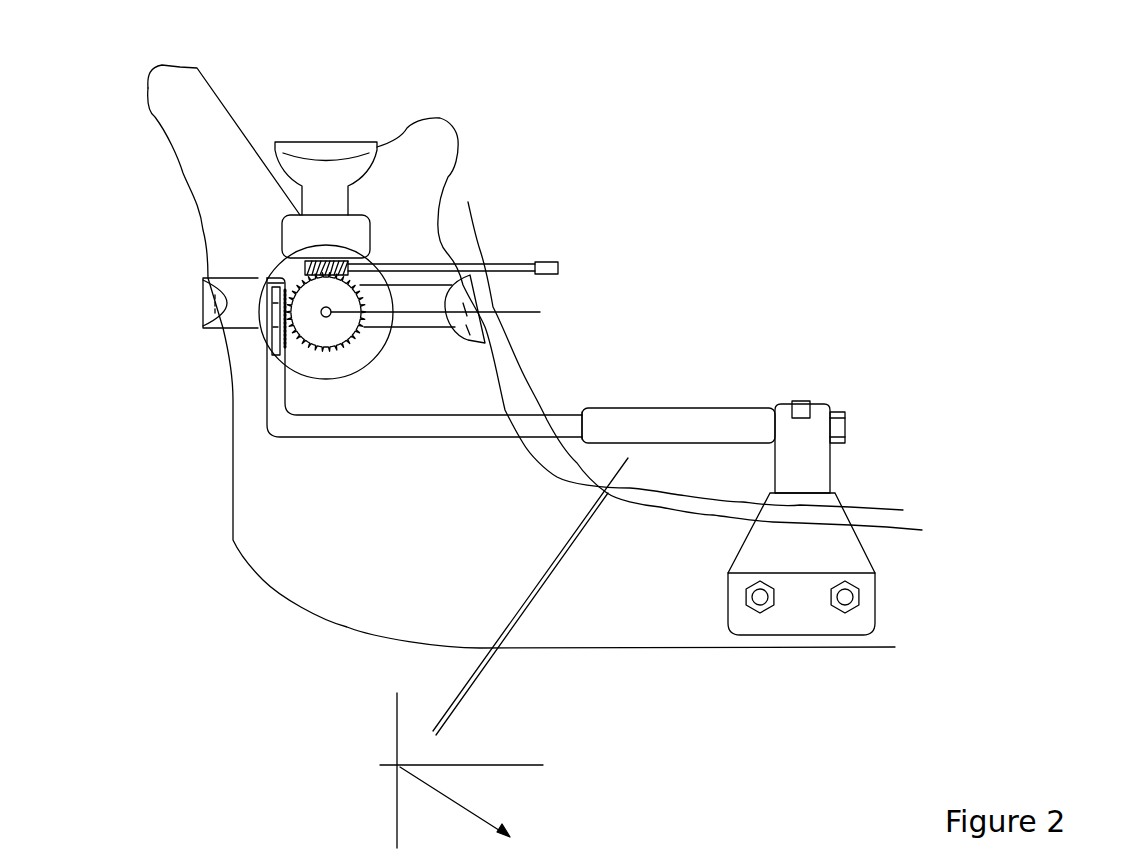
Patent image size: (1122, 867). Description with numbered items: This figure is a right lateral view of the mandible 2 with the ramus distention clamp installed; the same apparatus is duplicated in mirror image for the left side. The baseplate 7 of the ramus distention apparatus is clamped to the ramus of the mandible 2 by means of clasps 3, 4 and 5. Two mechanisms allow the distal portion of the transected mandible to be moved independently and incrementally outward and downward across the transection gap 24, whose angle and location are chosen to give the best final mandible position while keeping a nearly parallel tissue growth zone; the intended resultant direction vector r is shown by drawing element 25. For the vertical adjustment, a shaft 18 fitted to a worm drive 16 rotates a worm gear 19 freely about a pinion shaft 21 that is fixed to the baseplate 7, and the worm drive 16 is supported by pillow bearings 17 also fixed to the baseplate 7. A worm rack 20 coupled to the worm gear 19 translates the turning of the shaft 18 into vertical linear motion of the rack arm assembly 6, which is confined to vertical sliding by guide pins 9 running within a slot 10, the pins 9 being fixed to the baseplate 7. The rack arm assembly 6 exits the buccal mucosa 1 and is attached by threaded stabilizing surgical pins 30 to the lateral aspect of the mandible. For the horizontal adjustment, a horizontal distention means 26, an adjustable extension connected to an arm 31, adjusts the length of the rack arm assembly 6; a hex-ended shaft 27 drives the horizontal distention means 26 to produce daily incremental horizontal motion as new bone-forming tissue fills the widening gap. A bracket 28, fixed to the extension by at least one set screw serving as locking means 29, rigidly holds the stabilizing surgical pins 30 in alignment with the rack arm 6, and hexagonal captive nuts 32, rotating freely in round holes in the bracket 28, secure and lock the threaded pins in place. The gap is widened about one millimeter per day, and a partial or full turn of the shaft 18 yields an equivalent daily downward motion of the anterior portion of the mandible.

The buccal mucosa 1 is at (475, 222).
The mandible 2 is at (185, 63).
The clasp 3 is at (203, 288).
The clasp 4 is at (288, 142).
The clasp 5 is at (485, 325).
The rack arm assembly 6 is at (297, 440).
The baseplate 7 is at (307, 263).
The guide pins 9 is at (267, 333).
The slot 10 is at (272, 338).
The worm drive 16 is at (273, 283).
The pillow bearings 17 is at (345, 265).
The shaft 18 is at (557, 260).
The worm gear 19 is at (318, 350).
The worm rack 20 is at (262, 280).
The pinion shaft 21 is at (540, 312).
The transection gap 24 is at (522, 607).
The resultant direction vector 25 is at (380, 762).
The horizontal distention means 26 is at (693, 408).
The hex-ended shaft 27 is at (845, 422).
The bracket 28 is at (830, 405).
The locking means 29 is at (802, 402).
The stabilizing surgical pins 30 is at (845, 603).
The arm 31 is at (577, 410).
The captive nut 32 is at (857, 603).